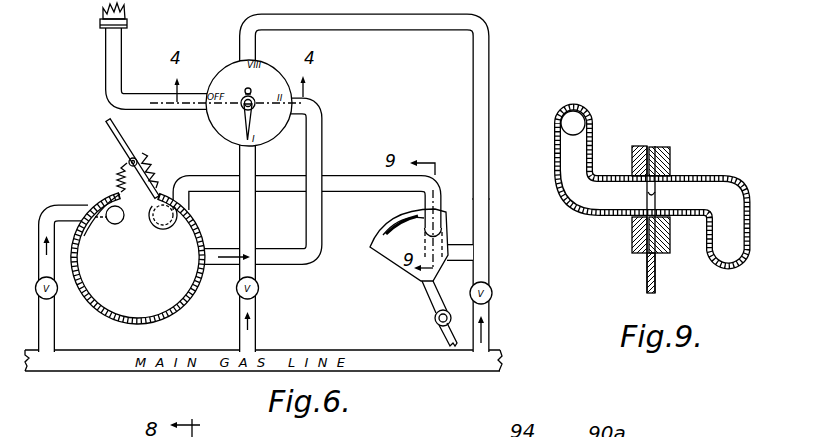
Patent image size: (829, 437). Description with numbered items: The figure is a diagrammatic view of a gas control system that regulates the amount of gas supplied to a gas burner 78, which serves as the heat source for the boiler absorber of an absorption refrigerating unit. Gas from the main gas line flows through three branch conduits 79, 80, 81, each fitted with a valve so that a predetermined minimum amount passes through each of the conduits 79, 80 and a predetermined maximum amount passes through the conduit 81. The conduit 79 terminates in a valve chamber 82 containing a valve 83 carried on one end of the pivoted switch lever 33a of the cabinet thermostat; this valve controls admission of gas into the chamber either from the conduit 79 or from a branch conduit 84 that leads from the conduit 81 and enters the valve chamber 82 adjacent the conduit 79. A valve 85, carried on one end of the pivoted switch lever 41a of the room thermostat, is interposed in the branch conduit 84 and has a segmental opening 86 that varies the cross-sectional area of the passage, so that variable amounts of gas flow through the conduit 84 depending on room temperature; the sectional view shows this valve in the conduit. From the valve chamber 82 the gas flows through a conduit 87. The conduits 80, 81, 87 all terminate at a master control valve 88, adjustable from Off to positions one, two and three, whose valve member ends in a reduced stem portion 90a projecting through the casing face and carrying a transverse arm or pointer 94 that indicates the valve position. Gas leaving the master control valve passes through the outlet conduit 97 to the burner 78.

In FIG. 6, the gas burner 78 is at (128, 23).
In FIG. 6, the outlet conduit 97 is at (160, 103).
In FIG. 6, the pivoted switch lever 33a is at (109, 131).
In FIG. 6, the branch conduit 84 is at (224, 167).
In FIG. 9, the branch conduit 84 is at (553, 155).
In FIG. 6, the master control valve 88 is at (294, 56).
In FIG. 6, the reduced stem portion 90a is at (236, 90).
In FIG. 6, the transverse arm or pointer 94 is at (233, 122).
In FIG. 6, the conduit 87 is at (289, 242).
In FIG. 6, the segmental opening 86 is at (427, 217).
In FIG. 9, the segmental opening 86 is at (656, 195).
In FIG. 6, the valve 85 is at (386, 249).
In FIG. 9, the valve 85 is at (647, 270).
In FIG. 6, the valve 83 is at (157, 226).
In FIG. 6, the valve chamber 82 is at (186, 306).
In FIG. 6, the branch conduit 79 is at (47, 327).
In FIG. 6, the branch conduit 80 is at (257, 318).
In FIG. 6, the branch conduit 81 is at (490, 320).
In FIG. 6, the pivoted switch lever 41a is at (432, 308).